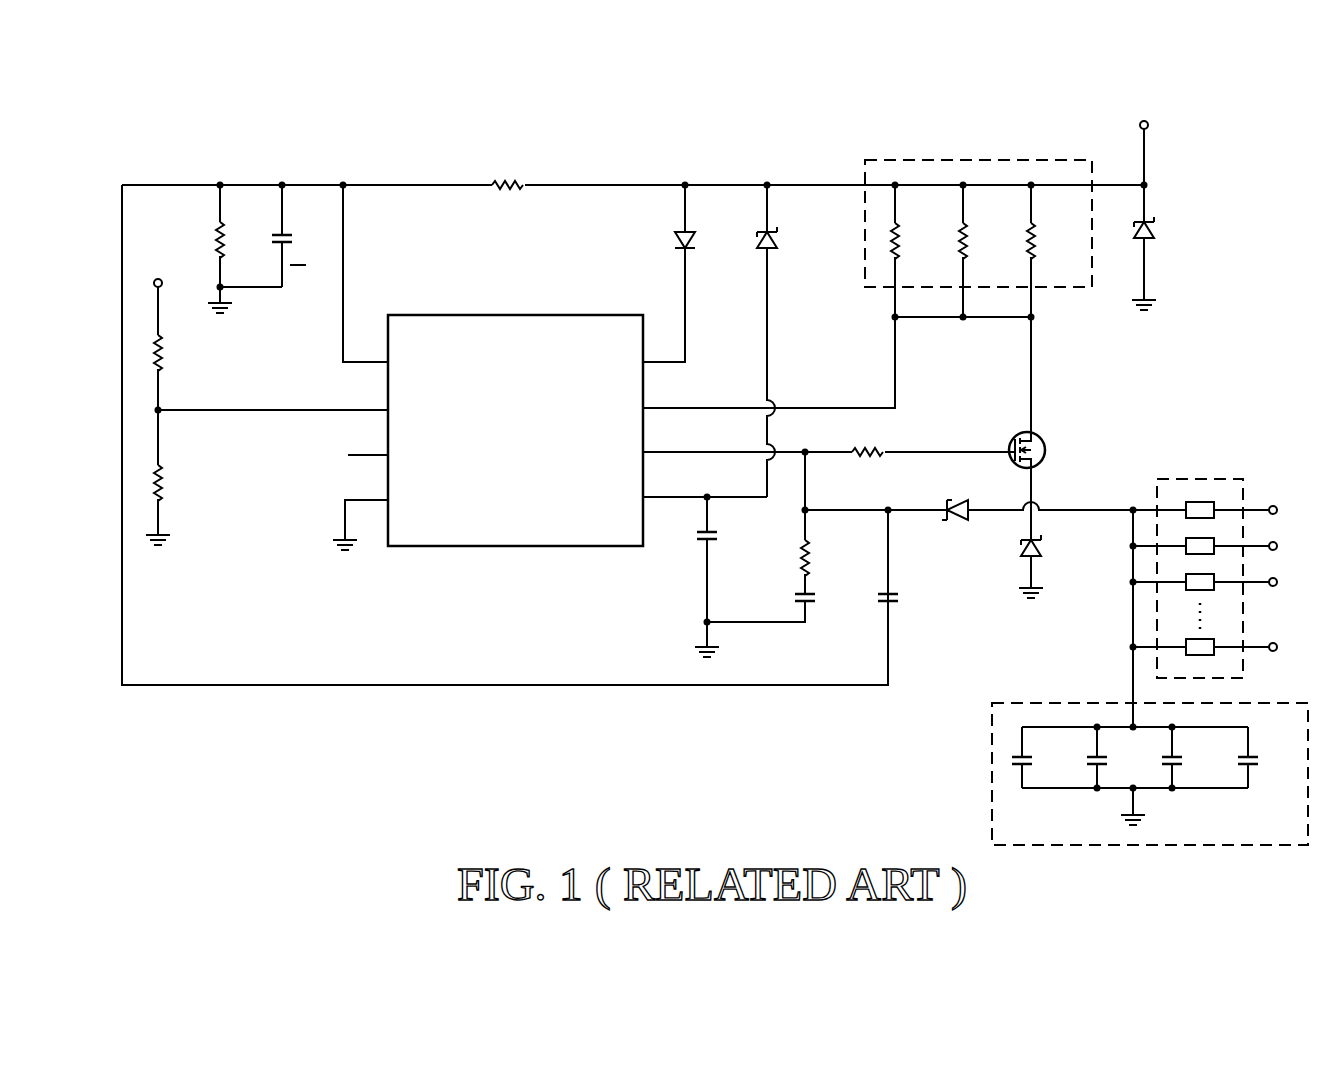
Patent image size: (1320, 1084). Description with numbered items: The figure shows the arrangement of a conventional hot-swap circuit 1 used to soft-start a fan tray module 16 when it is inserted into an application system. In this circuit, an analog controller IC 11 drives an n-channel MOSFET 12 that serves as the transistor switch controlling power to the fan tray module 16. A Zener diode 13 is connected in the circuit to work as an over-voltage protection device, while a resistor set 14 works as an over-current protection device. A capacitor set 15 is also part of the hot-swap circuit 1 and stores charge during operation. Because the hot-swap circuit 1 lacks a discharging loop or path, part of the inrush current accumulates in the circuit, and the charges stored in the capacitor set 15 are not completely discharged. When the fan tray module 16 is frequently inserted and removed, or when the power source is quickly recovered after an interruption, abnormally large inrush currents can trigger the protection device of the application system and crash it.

The hot-swap circuit 1 is at (614, 153).
The analog controller IC 11 is at (514, 315).
The n-channel MOSFET 12 is at (1046, 452).
The Zener diode 13 is at (775, 251).
The resistor set 14 is at (977, 160).
The capacitor set 15 is at (990, 775).
The fan tray module 16 is at (1197, 479).